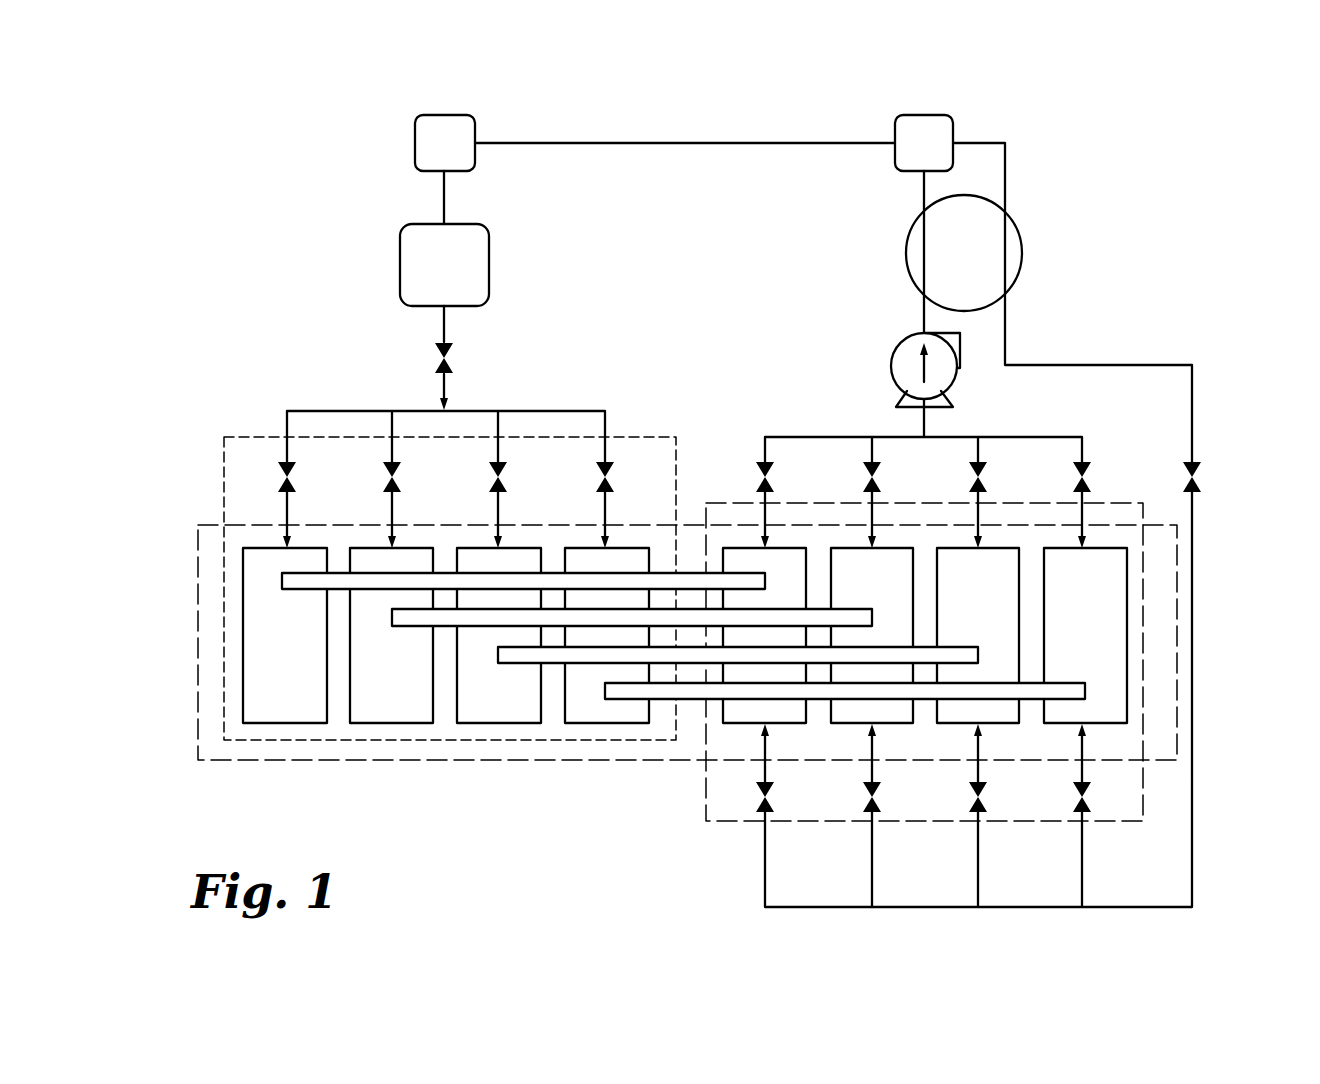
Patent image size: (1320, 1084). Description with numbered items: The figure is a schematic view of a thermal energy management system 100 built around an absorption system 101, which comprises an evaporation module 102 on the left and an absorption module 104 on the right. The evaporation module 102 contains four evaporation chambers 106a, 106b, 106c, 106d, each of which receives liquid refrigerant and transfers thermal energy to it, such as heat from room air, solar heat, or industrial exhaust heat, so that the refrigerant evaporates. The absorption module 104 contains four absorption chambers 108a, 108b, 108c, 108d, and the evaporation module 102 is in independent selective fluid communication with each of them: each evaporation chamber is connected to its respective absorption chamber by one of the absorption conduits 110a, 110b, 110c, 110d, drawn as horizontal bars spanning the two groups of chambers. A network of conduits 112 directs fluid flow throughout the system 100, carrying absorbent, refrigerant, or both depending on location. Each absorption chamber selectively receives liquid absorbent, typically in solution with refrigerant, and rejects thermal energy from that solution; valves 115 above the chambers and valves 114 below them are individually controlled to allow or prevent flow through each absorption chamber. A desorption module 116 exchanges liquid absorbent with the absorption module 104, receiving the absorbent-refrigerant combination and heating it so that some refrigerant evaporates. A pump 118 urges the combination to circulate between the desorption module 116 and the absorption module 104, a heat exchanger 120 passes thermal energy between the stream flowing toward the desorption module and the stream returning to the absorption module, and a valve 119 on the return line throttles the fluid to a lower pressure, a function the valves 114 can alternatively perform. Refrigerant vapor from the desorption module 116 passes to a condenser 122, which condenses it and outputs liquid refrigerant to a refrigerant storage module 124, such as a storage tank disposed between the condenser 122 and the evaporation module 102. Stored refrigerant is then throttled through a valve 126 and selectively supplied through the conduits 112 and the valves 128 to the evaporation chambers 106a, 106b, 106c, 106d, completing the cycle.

The thermal energy management system 100 is at (292, 216).
The absorption system 101 is at (198, 636).
The evaporation module 102 is at (224, 475).
The absorption module 104 is at (726, 822).
The evaporation chamber 106a is at (262, 723).
The evaporation chamber 106b is at (352, 723).
The evaporation chamber 106c is at (462, 723).
The evaporation chamber 106d is at (605, 723).
The absorption chamber 108a is at (790, 724).
The absorption chamber 108b is at (895, 724).
The absorption chamber 108c is at (1003, 724).
The absorption chamber 108d is at (1127, 582).
The absorption conduit 110a is at (282, 583).
The absorption conduit 110b is at (412, 627).
The absorption conduit 110c is at (518, 664).
The absorption conduit 110d is at (660, 700).
The conduits 112 is at (714, 142).
The valves 114 is at (774, 808).
The valves 115 is at (752, 462).
The desorption module 116 is at (905, 159).
The pump 118 is at (893, 355).
The valve 119 is at (1200, 466).
The heat exchanger 120 is at (1019, 234).
The condenser 122 is at (426, 159).
The refrigerant storage module 124 is at (425, 271).
The valve 126 is at (455, 345).
The valves 128 is at (280, 462).